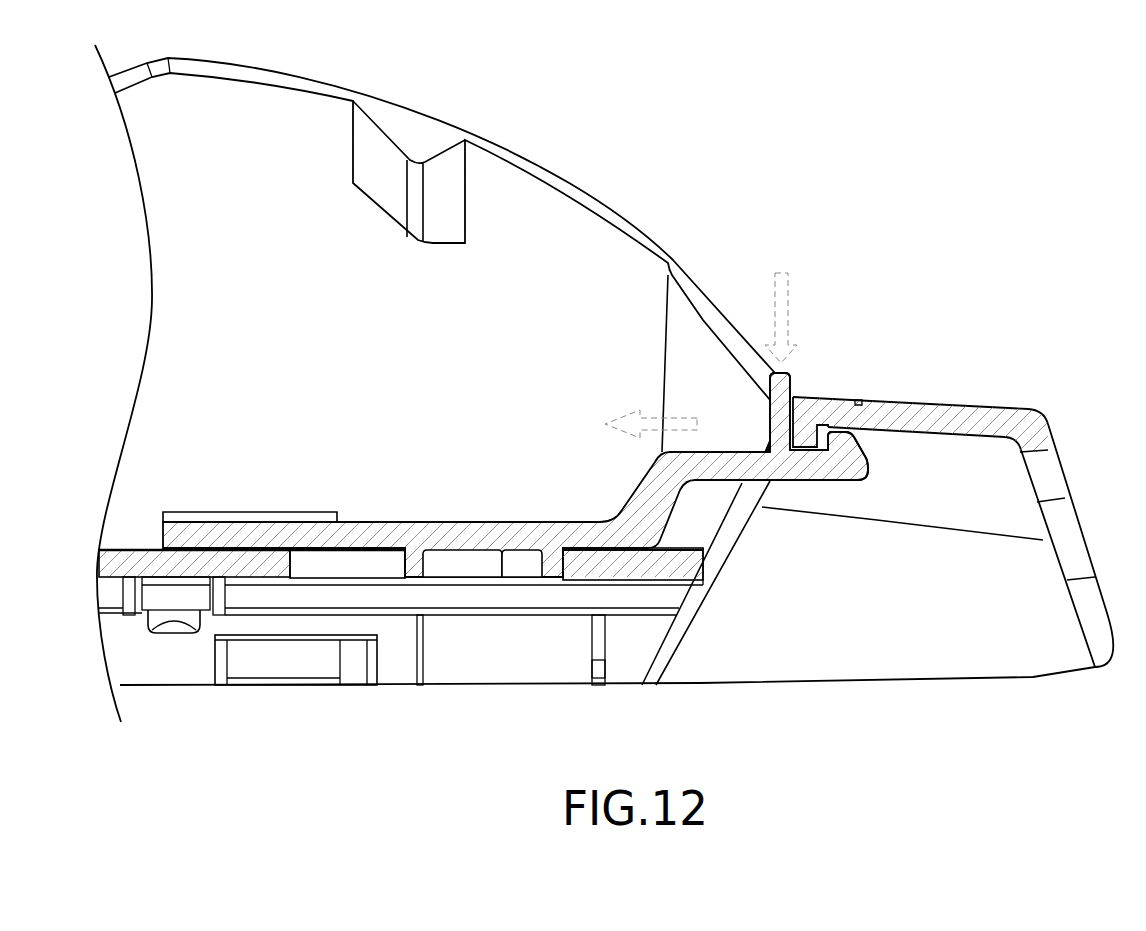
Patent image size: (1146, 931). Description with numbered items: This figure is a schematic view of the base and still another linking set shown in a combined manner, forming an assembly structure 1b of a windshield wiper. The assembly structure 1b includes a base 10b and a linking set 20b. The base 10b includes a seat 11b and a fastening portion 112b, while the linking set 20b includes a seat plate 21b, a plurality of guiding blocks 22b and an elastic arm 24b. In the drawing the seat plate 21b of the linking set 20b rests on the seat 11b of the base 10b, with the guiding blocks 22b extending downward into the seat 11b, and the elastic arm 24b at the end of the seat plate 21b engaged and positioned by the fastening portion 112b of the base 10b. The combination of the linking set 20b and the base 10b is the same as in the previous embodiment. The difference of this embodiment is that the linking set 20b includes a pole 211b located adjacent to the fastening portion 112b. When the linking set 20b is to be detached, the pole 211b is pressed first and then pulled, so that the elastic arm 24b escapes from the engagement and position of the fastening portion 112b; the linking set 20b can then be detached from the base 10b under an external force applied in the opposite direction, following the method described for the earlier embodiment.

The assembly structure 1b is at (886, 89).
The base 10b is at (1051, 432).
The seat 11b is at (405, 597).
The fastening portion 112b is at (810, 435).
The linking set 20b is at (614, 202).
The seat plate 21b is at (255, 533).
The pole 211b is at (778, 417).
The guiding blocks 22b is at (551, 562).
The elastic arm 24b is at (850, 460).